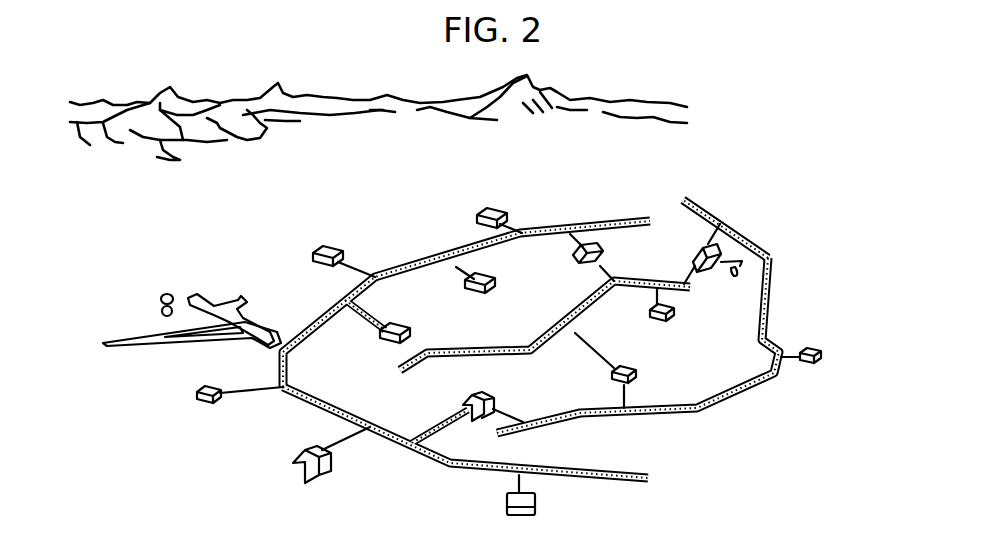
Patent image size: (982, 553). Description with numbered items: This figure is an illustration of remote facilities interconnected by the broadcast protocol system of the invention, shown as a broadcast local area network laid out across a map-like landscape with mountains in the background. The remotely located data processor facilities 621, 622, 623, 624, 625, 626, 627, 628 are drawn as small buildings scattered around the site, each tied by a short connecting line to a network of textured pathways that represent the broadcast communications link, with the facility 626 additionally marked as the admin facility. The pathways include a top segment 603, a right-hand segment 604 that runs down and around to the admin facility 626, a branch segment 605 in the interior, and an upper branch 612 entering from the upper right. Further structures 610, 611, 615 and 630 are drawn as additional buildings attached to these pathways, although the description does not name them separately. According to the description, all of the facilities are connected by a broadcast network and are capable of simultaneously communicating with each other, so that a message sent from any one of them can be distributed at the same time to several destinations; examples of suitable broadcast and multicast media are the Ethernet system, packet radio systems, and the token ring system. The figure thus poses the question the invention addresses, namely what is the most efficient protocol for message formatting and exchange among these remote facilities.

The roadway segment 603 is at (610, 225).
The roadway segment 604 is at (773, 250).
The roadway segment 605 is at (537, 352).
The roadway segment 612 is at (719, 223).
The network node 610 is at (463, 403).
The network node 611 is at (386, 345).
The network node 615 is at (603, 252).
The remotely located data processor facility 621 is at (478, 215).
The remotely located data processor facility 622 is at (330, 247).
The remotely located data processor facility 623 is at (198, 398).
The remotely located data processor facility 624 is at (332, 480).
The remotely located data processor facility 625 is at (535, 505).
The remotely located data processor facility 626 is at (816, 365).
The remotely located data processor facility 627 is at (678, 313).
The remotely located data processor facility 628 is at (497, 283).
The network node 630 is at (640, 375).